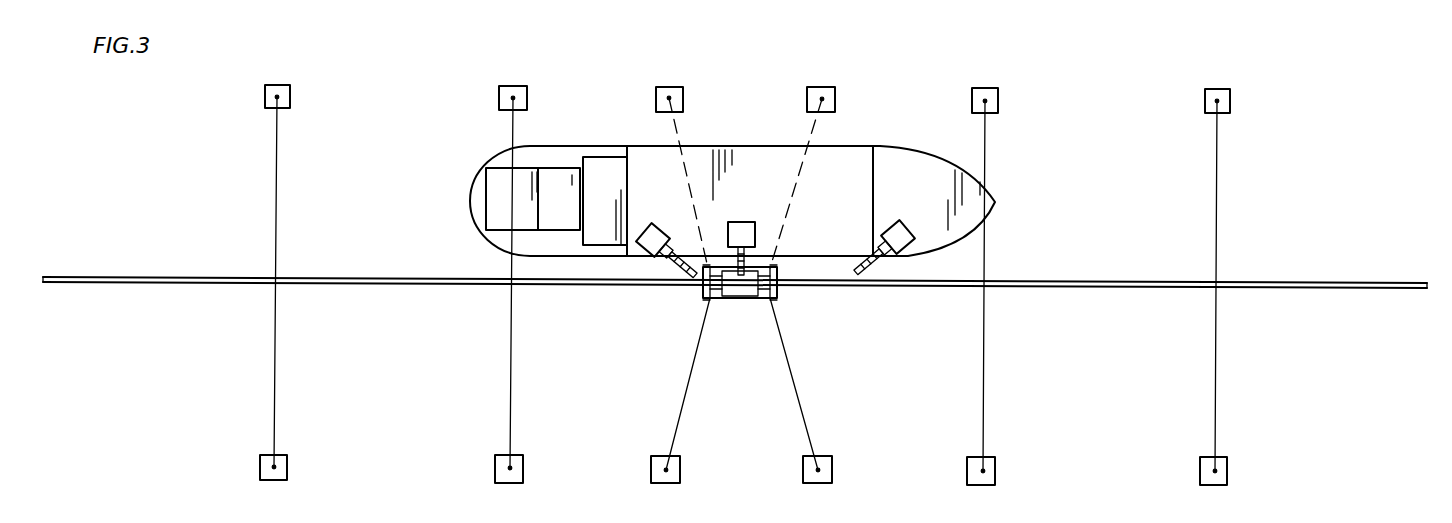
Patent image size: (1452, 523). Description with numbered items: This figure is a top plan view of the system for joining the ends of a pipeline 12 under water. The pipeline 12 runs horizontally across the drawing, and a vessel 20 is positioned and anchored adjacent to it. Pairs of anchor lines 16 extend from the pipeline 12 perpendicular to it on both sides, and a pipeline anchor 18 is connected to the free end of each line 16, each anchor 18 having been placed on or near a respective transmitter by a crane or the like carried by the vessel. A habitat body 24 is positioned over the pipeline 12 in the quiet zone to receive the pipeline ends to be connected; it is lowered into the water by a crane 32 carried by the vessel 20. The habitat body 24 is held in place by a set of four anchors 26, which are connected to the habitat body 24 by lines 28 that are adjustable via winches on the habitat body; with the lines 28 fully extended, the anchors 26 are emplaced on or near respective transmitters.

The pipeline 12 is at (122, 277).
The anchor lines 16 is at (277, 188).
The pipeline anchor 18 is at (292, 98).
The vessel 20 is at (755, 146).
The habitat body 24 is at (745, 300).
The anchors 26 is at (671, 87).
The lines 28 is at (678, 130).
The crane 32 is at (757, 238).